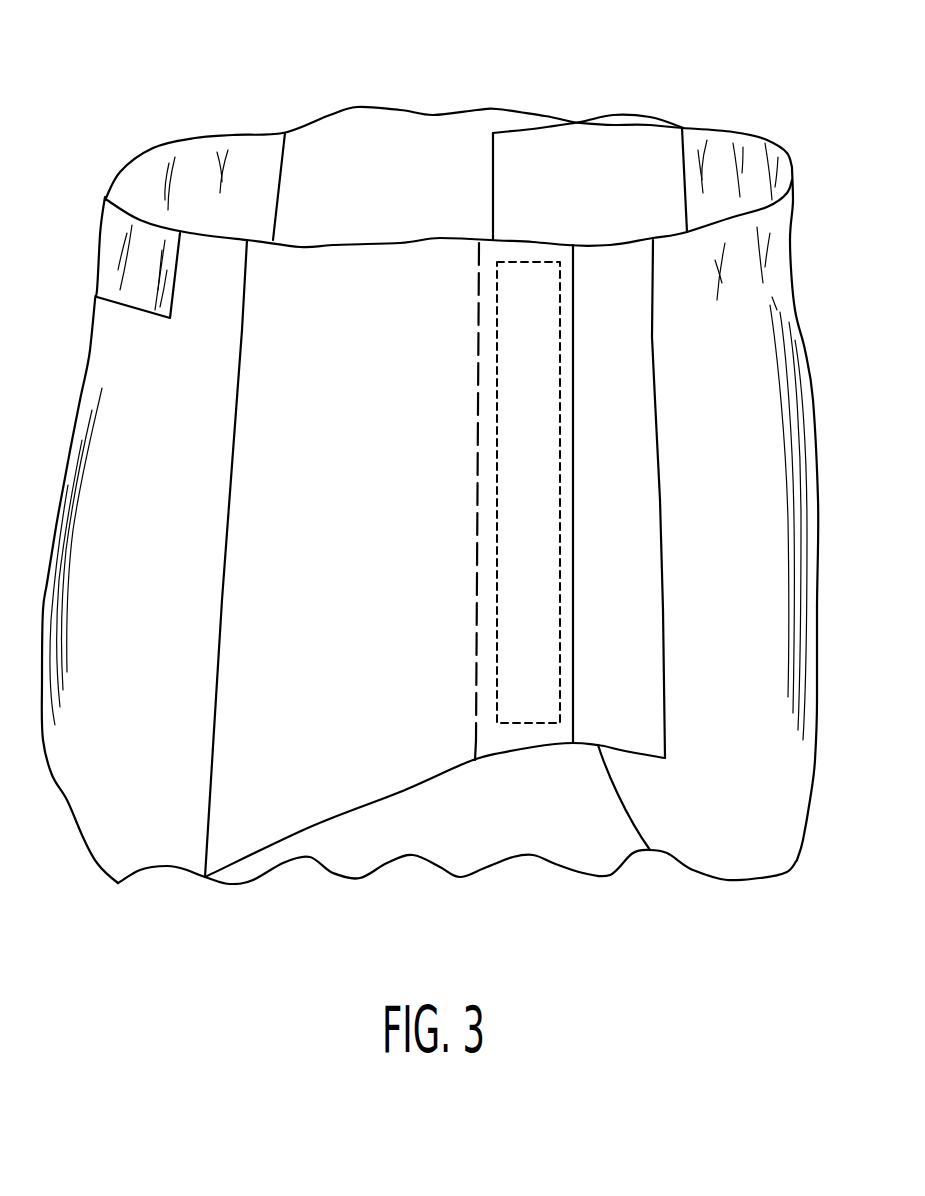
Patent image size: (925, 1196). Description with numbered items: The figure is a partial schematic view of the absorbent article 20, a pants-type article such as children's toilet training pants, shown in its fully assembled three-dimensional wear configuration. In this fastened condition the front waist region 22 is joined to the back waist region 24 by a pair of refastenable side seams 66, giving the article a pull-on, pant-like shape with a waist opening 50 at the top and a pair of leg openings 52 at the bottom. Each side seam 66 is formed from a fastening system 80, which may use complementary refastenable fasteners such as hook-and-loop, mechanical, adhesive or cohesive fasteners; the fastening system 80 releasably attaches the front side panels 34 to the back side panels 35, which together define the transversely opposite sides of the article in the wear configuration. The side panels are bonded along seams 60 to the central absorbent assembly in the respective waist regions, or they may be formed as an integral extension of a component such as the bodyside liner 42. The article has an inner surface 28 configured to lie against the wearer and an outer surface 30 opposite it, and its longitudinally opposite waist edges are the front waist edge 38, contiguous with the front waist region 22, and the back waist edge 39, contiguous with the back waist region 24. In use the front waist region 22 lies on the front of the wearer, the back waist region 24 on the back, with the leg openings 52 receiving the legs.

The absorbent article 20 is at (156, 71).
The front waist region 22 is at (775, 610).
The back waist region 24 is at (110, 482).
The inner surface 28 is at (390, 190).
The outer surface 30 is at (738, 536).
The front side panels 34 is at (643, 132).
The back side panels 35 is at (270, 263).
The front waist edge 38 is at (790, 150).
The back waist edge 39 is at (117, 173).
The bodyside liner 42 is at (750, 143).
The waist opening 50 is at (461, 198).
The leg openings 52 is at (588, 862).
The seams 60 is at (240, 358).
The refastenable side seams 66 is at (547, 250).
The fastening system 80 is at (497, 293).